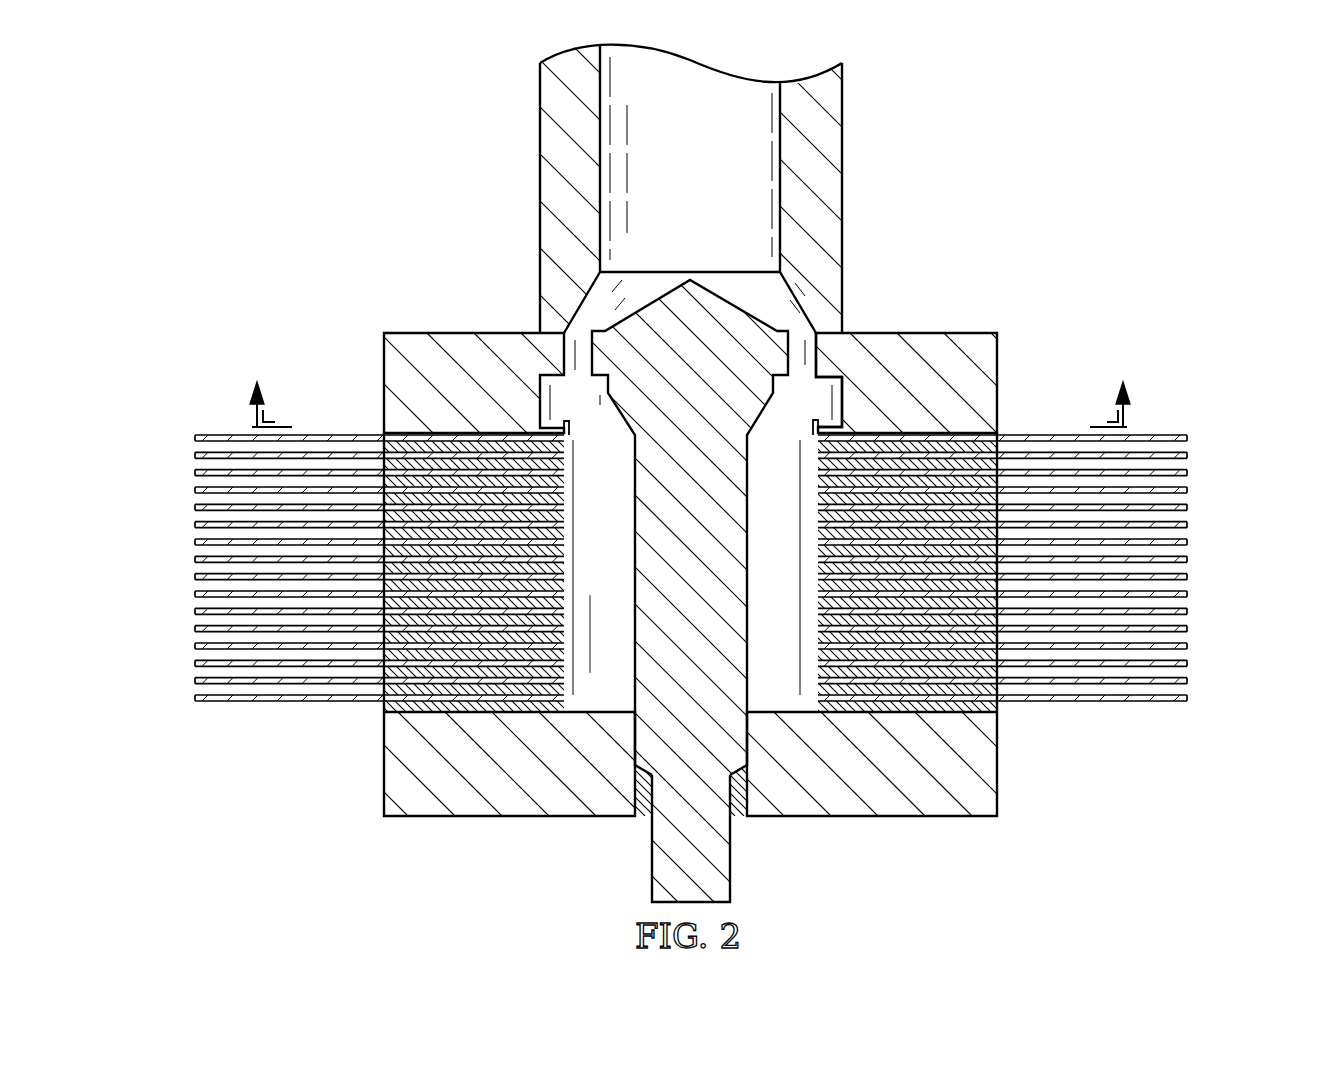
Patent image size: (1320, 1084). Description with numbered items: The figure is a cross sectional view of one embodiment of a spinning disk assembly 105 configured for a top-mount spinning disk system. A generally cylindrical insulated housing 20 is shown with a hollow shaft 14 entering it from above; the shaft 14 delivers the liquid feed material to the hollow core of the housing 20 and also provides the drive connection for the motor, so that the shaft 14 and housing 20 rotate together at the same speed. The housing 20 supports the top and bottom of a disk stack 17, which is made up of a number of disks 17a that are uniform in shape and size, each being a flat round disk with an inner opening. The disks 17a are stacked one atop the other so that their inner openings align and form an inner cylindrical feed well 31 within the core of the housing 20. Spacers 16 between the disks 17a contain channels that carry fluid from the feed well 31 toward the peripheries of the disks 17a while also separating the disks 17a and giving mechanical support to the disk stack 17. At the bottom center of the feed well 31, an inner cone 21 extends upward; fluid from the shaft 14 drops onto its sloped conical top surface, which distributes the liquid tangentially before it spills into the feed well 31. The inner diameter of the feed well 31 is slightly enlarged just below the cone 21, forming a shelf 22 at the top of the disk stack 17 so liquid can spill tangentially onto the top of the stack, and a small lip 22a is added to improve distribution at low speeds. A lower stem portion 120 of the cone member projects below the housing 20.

The spinning disk assembly 105 is at (946, 211).
The hollow shaft 14 is at (847, 145).
The insulated housing 20 is at (454, 332).
The spacers 16 is at (1000, 737).
The inner cone 21 is at (683, 323).
The shelf 22 is at (830, 423).
The lip 22a is at (814, 428).
The feed well 31 is at (583, 584).
The disk stack 17 is at (660, 624).
The disk 17a is at (1177, 467).
The insert stem 120 is at (650, 858).